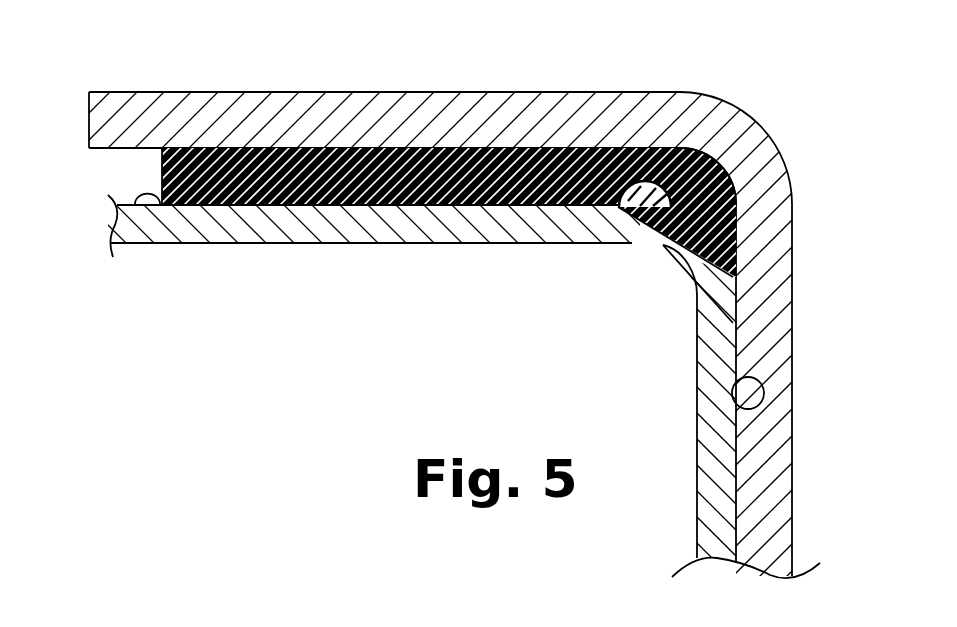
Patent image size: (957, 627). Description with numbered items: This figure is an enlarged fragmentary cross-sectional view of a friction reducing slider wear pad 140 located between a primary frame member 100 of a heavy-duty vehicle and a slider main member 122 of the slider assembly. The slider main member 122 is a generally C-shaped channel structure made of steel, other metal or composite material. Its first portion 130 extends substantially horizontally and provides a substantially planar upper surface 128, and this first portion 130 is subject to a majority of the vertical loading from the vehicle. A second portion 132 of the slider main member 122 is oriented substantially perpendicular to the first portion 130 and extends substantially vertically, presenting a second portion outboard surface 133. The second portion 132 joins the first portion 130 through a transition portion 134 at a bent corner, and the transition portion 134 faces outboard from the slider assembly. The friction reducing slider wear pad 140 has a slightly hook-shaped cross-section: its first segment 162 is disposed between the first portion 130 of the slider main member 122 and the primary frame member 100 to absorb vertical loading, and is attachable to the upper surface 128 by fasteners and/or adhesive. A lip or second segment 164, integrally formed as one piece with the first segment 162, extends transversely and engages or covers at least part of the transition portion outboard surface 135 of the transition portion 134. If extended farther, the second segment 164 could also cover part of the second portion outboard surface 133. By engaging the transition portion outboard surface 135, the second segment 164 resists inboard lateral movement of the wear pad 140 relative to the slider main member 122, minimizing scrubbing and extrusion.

The primary frame member 100 is at (468, 110).
The slider main member 122 is at (552, 252).
The upper surface 128 is at (161, 203).
The first portion 130 is at (212, 228).
The second portion 132 is at (703, 477).
The second portion outboard surface 133 is at (730, 422).
The transition portion 134 is at (663, 245).
The transition portion outboard surface 135 is at (618, 207).
The friction reducing slider wear pad 140 is at (152, 166).
The first segment 162 is at (337, 168).
The second segment 164 is at (720, 237).